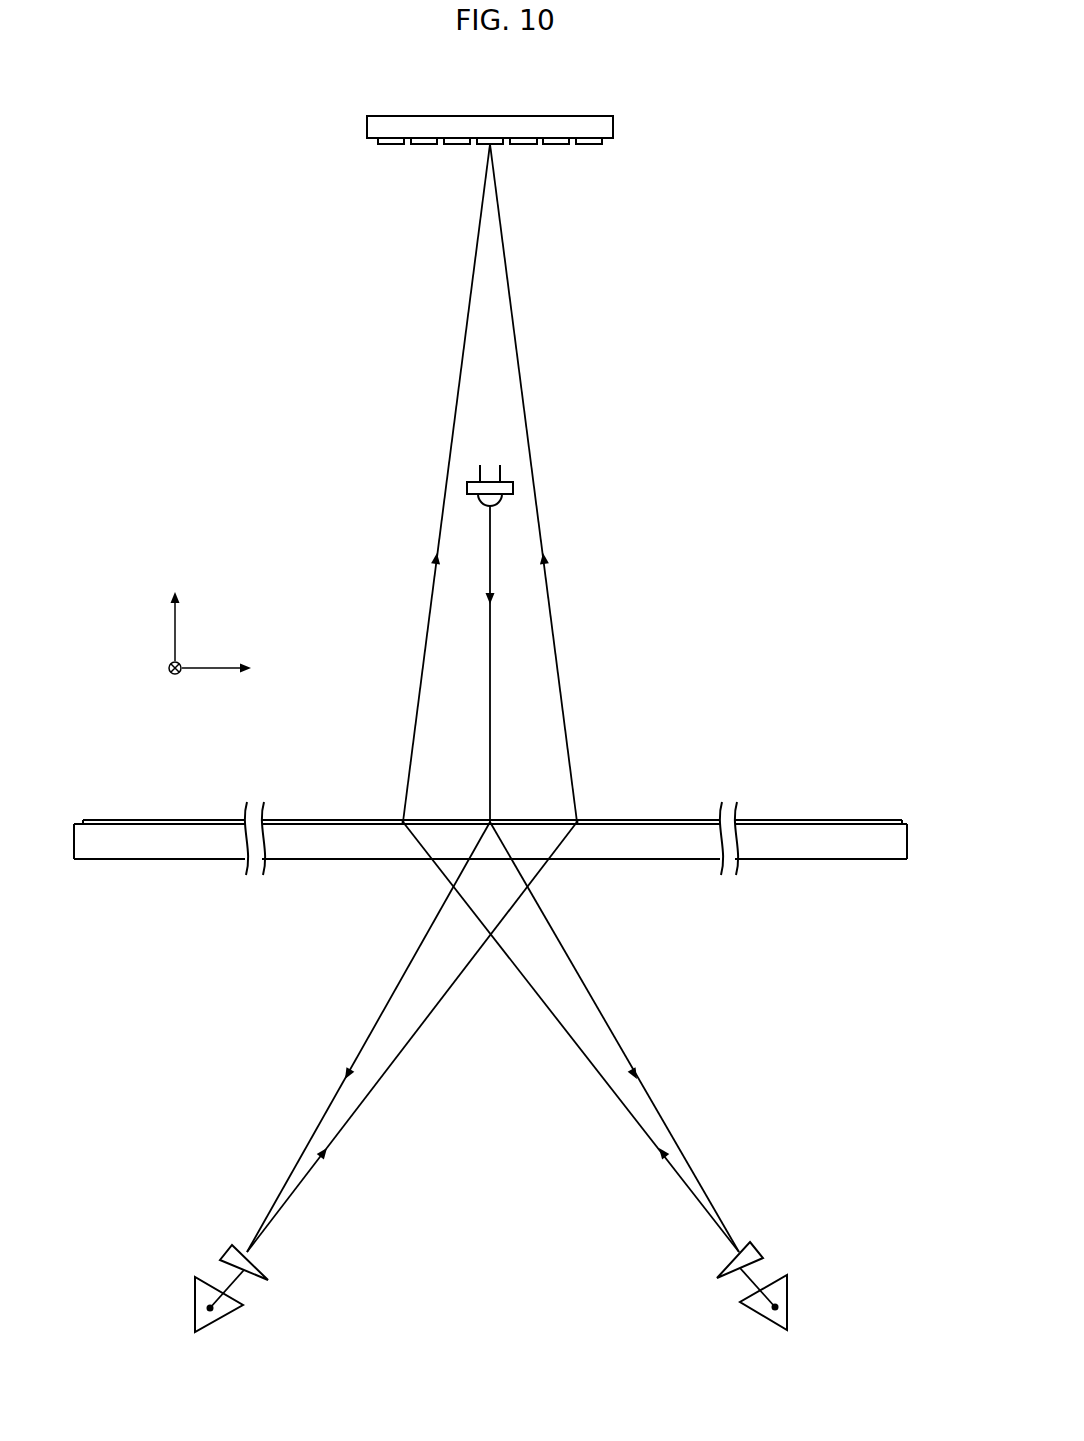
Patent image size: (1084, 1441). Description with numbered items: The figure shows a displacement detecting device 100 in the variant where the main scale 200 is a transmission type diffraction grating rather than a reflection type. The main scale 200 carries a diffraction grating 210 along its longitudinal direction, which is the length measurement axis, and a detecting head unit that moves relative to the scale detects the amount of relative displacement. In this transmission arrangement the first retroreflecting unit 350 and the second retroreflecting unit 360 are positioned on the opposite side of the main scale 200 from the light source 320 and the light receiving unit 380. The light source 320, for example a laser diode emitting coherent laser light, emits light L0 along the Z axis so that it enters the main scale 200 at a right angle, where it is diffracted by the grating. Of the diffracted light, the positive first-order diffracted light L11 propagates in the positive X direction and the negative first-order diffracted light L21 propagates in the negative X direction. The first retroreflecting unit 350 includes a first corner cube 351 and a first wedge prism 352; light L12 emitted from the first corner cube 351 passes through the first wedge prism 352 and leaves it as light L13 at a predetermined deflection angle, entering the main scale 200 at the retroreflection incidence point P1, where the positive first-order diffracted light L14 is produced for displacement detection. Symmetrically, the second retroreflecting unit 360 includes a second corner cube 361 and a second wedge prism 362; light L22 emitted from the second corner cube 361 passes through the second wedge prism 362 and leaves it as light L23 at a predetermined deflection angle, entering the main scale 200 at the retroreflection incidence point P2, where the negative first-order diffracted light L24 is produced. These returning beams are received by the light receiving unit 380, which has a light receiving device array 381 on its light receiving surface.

The displacement detecting device 100 is at (236, 240).
The main scale 200 is at (872, 838).
The diffraction grating 210 is at (810, 818).
The light source 320 is at (488, 480).
The light receiving unit 380 is at (515, 135).
The light receiving device array 381 is at (598, 156).
The first retroreflecting unit 350 is at (780, 1257).
The first corner cube 351 is at (790, 1298).
The first wedge prism 352 is at (751, 1243).
The second retroreflecting unit 360 is at (202, 1259).
The second corner cube 361 is at (195, 1300).
The second wedge prism 362 is at (233, 1246).
The light L0 is at (492, 556).
The positive first-order diffracted light L11 is at (598, 1003).
The light emitted from the first corner cube L12 is at (748, 1279).
The light emitted from the first wedge prism L13 is at (638, 1127).
The positive first-order diffracted light L14 is at (458, 365).
The negative first-order diffracted light L21 is at (383, 1003).
The light emitted from the second corner cube L22 is at (235, 1279).
The light emitted from the second wedge prism L23 is at (343, 1127).
The negative first-order diffracted light L24 is at (521, 365).
The retroreflection incidence point P1 is at (403, 826).
The retroreflection incidence point P2 is at (577, 826).